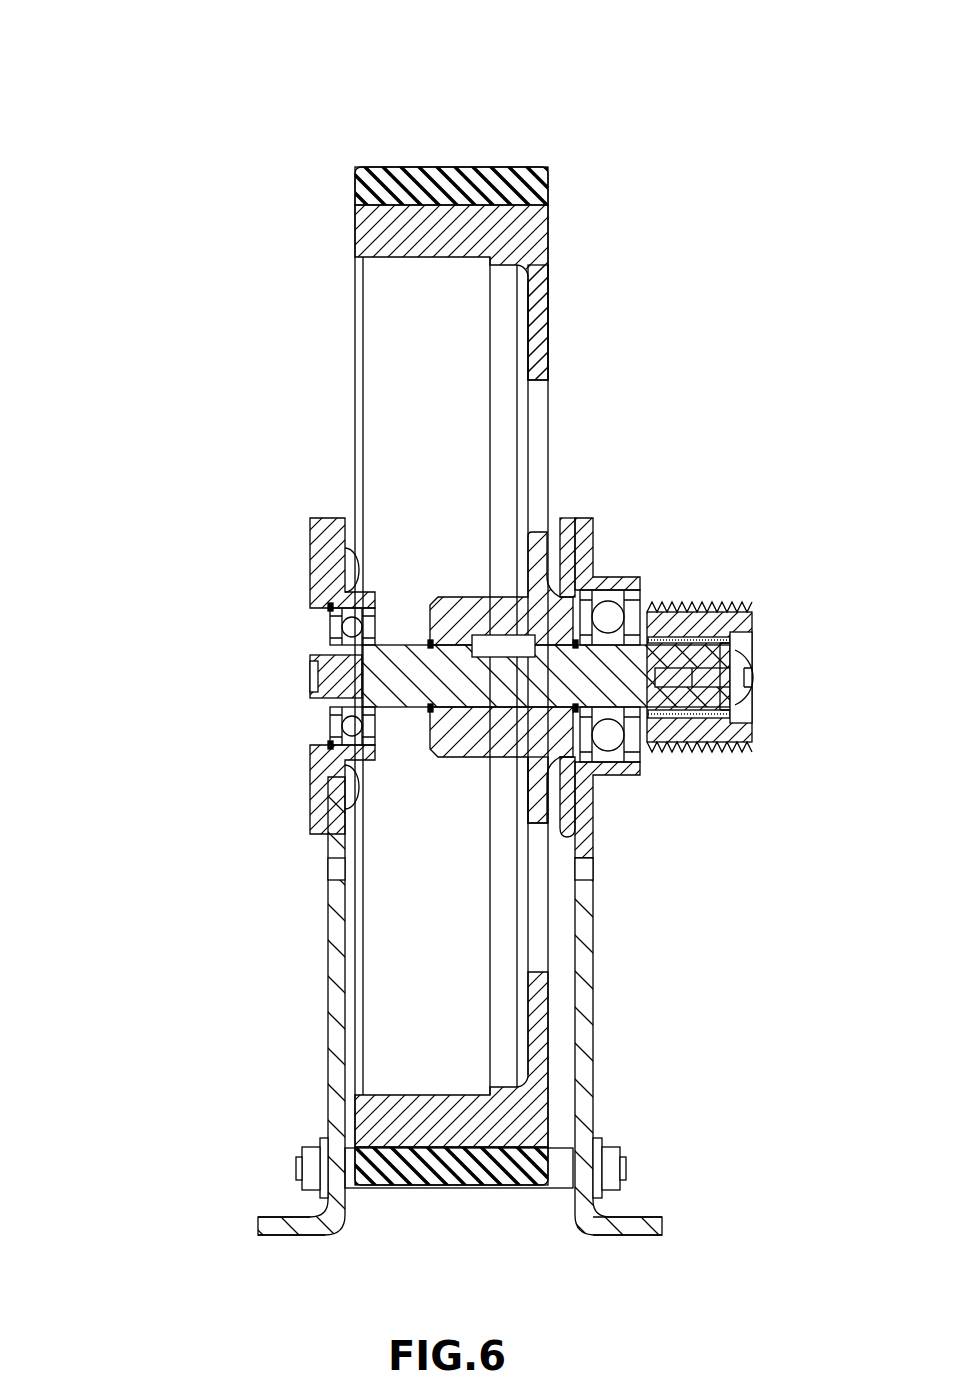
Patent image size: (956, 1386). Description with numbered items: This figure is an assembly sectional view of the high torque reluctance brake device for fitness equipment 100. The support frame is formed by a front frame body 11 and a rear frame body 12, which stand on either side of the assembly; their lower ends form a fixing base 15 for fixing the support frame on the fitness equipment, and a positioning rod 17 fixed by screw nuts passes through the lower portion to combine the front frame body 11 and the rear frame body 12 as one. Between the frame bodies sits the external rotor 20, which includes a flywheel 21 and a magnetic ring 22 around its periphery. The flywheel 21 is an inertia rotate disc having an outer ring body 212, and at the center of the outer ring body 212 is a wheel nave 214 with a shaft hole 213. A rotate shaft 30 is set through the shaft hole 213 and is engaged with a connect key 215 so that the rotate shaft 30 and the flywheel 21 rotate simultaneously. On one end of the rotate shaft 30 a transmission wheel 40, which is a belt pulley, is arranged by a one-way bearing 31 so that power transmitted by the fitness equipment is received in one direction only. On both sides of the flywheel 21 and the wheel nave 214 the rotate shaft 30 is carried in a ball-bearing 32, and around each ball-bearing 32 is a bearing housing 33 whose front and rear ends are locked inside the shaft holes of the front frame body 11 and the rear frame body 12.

The high torque reluctance brake device for fitness equipment 100 is at (72, 26).
The external rotor 20 is at (451, 618).
The flywheel 21 is at (410, 222).
The magnetic ring 22 is at (468, 185).
The outer ring body 212 is at (535, 326).
The shaft hole 213 is at (540, 700).
The wheel nave 214 is at (457, 602).
The connect key 215 is at (500, 640).
The rotate shaft 30 is at (630, 670).
The one-way bearing 31 is at (727, 720).
The ball-bearing 32 is at (610, 618).
The bearing housing 33 is at (603, 580).
The transmission wheel 40 is at (683, 730).
The front frame body 11 is at (333, 955).
The rear frame body 12 is at (583, 947).
The fixing base 15 is at (282, 1224).
The positioning rod 17 is at (562, 1177).